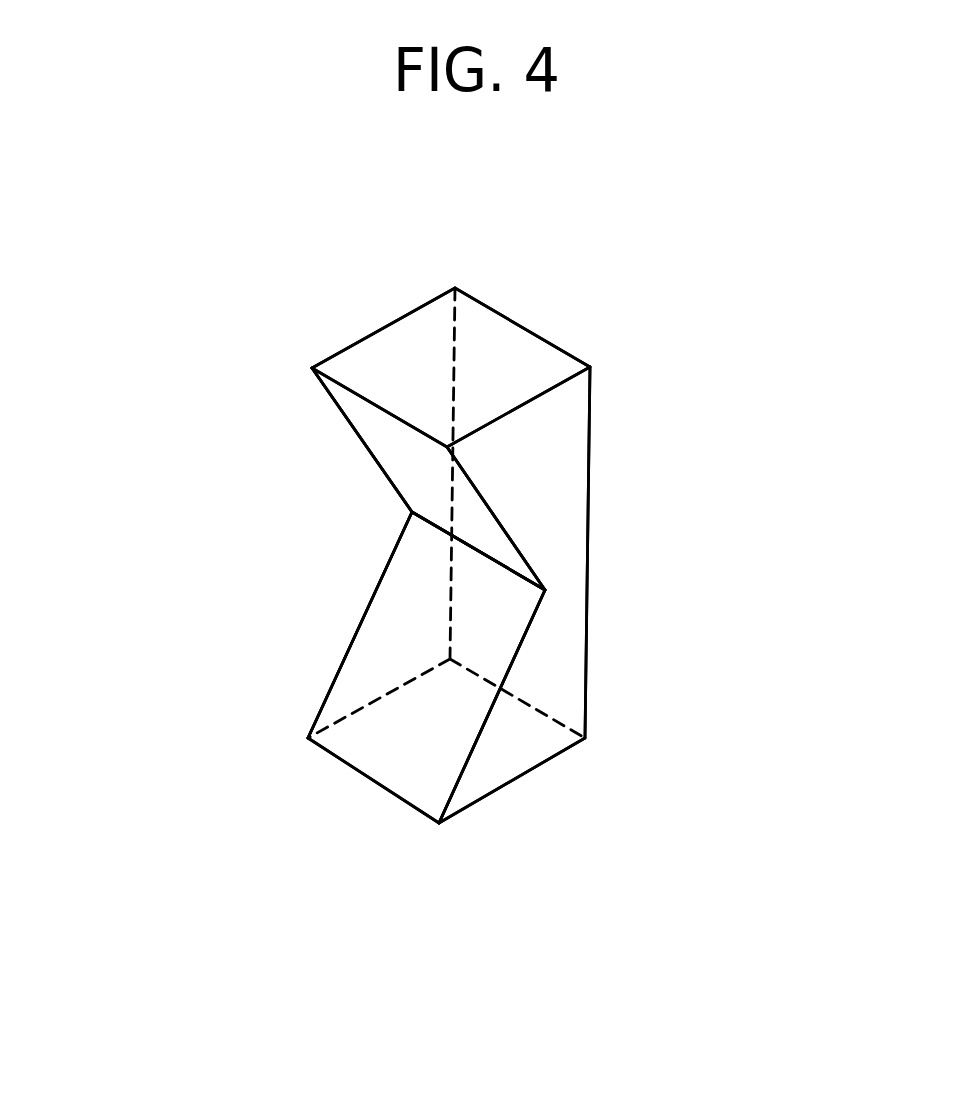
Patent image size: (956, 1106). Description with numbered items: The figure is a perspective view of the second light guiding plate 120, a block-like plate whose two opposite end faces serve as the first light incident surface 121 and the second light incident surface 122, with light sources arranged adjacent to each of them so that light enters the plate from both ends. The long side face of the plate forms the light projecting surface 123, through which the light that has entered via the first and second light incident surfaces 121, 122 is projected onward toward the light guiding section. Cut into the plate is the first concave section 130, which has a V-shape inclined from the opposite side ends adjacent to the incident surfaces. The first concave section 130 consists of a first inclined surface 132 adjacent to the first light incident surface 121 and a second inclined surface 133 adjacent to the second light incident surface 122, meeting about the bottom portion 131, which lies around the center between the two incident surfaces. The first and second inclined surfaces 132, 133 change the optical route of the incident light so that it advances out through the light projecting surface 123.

The second light guiding plate 120 is at (658, 290).
The first light incident surface 121 is at (425, 333).
The second light incident surface 122 is at (498, 793).
The light projecting surface 123 is at (587, 663).
The first concave section 130 is at (128, 480).
The bottom portion 131 is at (545, 590).
The first inclined surface 132 is at (407, 470).
The second inclined surface 133 is at (372, 673).